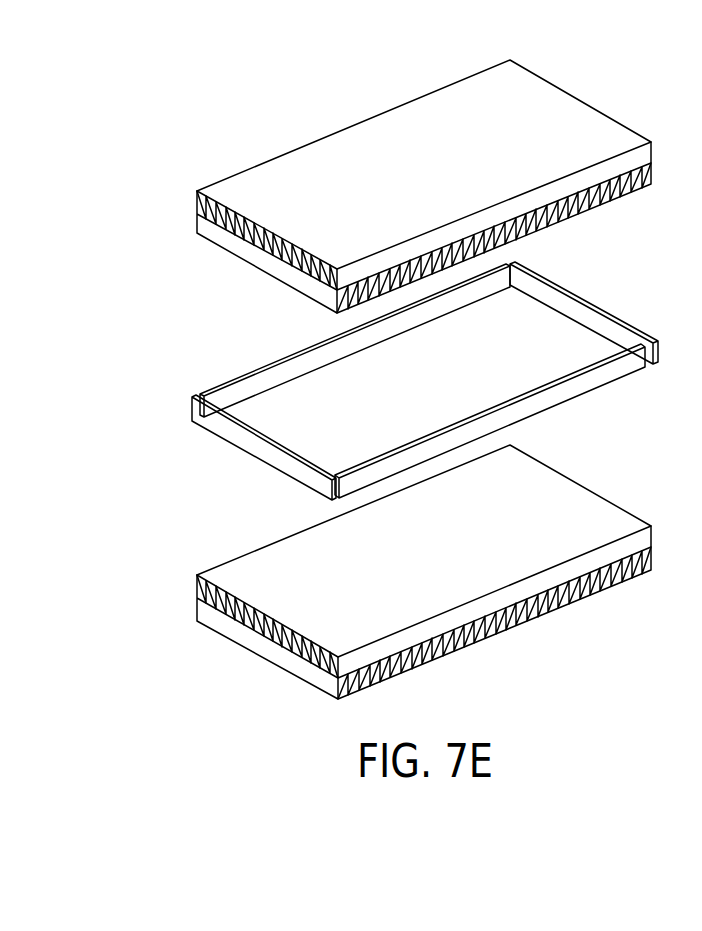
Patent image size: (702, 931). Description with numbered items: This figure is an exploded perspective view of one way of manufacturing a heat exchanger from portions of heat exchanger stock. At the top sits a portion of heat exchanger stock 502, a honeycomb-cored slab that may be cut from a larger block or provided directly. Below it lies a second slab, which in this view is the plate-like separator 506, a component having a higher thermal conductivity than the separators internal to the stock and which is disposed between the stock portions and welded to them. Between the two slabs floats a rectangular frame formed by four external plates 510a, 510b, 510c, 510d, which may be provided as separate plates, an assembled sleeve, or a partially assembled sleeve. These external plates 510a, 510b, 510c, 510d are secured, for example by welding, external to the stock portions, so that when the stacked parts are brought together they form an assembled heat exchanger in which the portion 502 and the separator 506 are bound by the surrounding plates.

The portion of heat exchanger stock 502 is at (245, 149).
The separator 506 is at (245, 538).
The external plate 510a is at (568, 308).
The external plate 510b is at (483, 427).
The external plate 510c is at (310, 365).
The external plate 510d is at (222, 424).